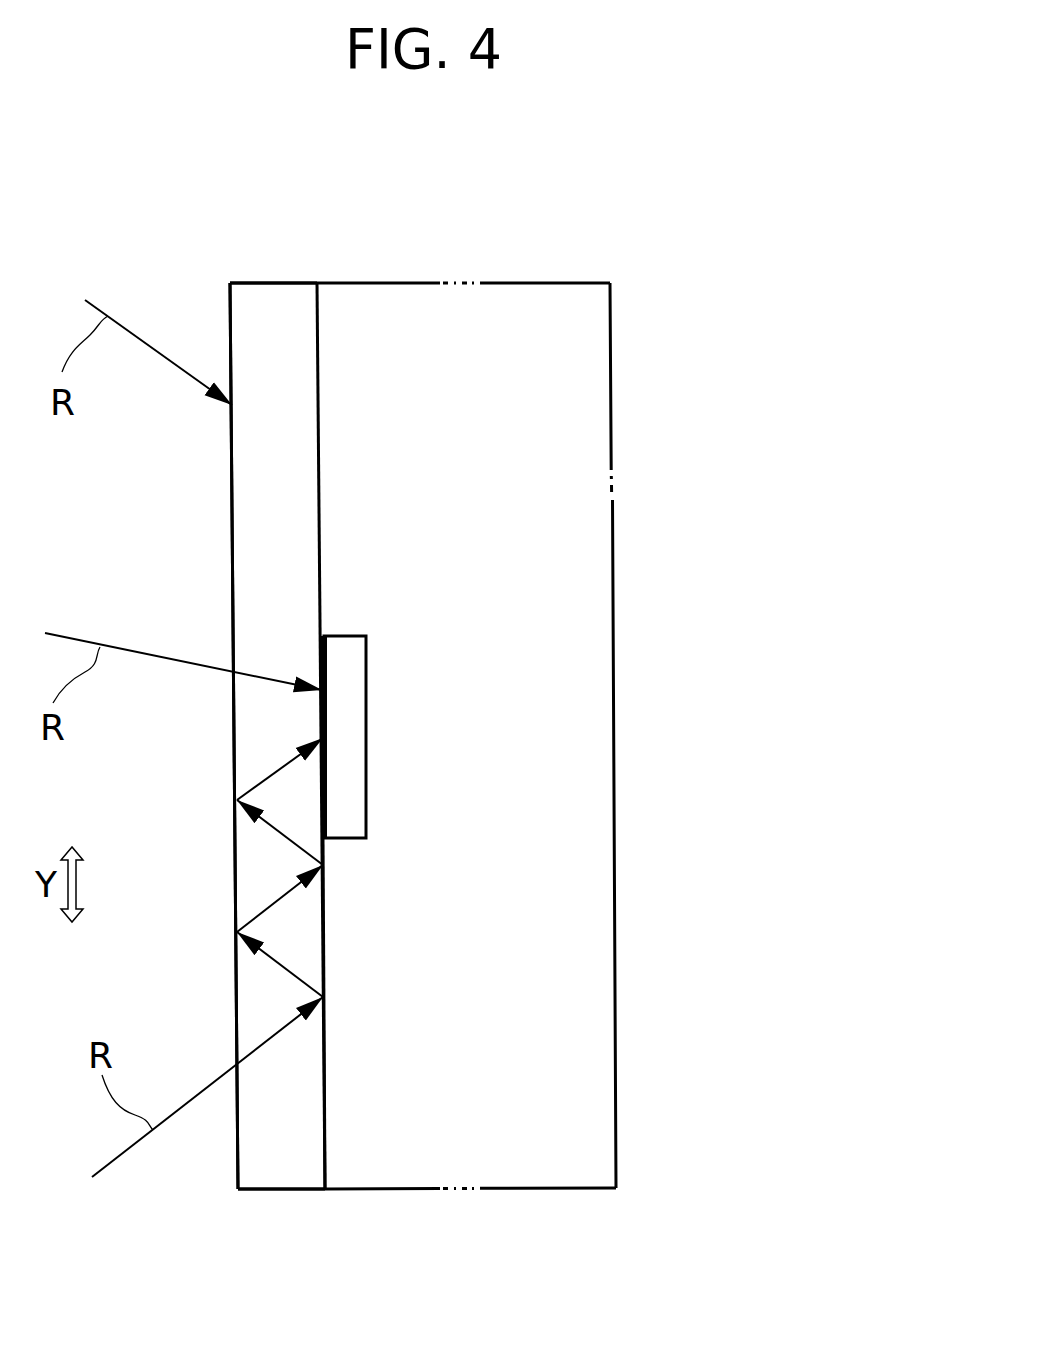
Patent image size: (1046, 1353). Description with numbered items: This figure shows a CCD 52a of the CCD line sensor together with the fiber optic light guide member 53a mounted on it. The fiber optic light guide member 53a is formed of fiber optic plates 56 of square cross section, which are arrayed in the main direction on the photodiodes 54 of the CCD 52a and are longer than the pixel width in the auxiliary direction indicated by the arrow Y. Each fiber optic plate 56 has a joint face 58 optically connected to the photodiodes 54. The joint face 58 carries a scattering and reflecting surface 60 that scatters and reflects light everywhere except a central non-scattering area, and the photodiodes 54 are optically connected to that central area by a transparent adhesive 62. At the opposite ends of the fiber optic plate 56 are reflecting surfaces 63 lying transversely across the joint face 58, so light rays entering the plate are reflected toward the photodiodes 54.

The CCD 52a is at (563, 383).
The fiber optic light guide member 53a is at (208, 316).
The photodiodes 54 is at (366, 710).
The fiber optic plates 56 is at (257, 458).
The joint face 58 is at (322, 563).
The scattering and reflecting surface 60 is at (324, 941).
The transparent adhesive 62 is at (323, 709).
The reflecting surfaces 63 is at (290, 283).